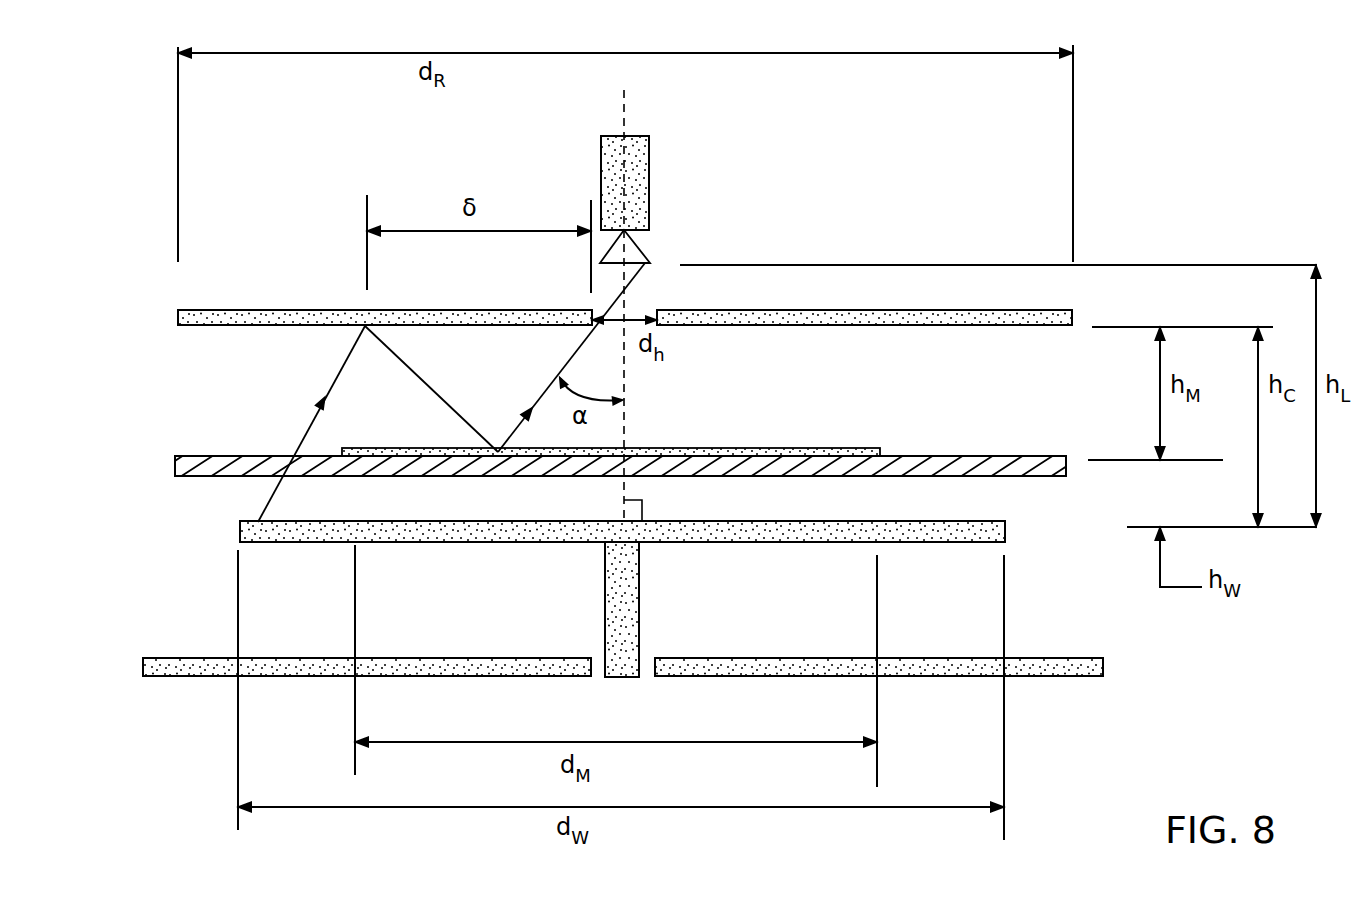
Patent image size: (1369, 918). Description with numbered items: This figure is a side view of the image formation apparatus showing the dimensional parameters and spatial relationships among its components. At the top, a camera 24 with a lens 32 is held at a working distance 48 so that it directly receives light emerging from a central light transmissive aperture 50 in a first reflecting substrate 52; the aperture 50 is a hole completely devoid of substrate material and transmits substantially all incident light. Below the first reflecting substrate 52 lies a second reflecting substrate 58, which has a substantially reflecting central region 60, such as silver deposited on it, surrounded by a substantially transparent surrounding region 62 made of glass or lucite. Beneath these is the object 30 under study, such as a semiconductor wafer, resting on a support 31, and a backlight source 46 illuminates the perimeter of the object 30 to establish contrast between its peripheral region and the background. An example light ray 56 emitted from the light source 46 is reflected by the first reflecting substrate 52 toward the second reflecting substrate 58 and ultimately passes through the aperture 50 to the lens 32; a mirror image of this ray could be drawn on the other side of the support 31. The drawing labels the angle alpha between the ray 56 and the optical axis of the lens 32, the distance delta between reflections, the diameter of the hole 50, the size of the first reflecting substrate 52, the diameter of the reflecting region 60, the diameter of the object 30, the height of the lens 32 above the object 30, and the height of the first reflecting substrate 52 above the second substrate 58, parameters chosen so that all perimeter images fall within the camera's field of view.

The camera 24 is at (650, 152).
The lens 32 is at (642, 242).
The working distance 48 is at (625, 440).
The central light transmissive aperture 50 is at (656, 314).
The first reflecting substrate 52 is at (852, 309).
The example light ray 56 is at (315, 415).
The second reflecting substrate 58 is at (1013, 478).
The substantially reflecting central region 60 is at (822, 448).
The substantially transparent surrounding region 62 is at (220, 455).
The object 30 is at (857, 520).
The support 31 is at (605, 587).
The backlight source 46 is at (475, 657).